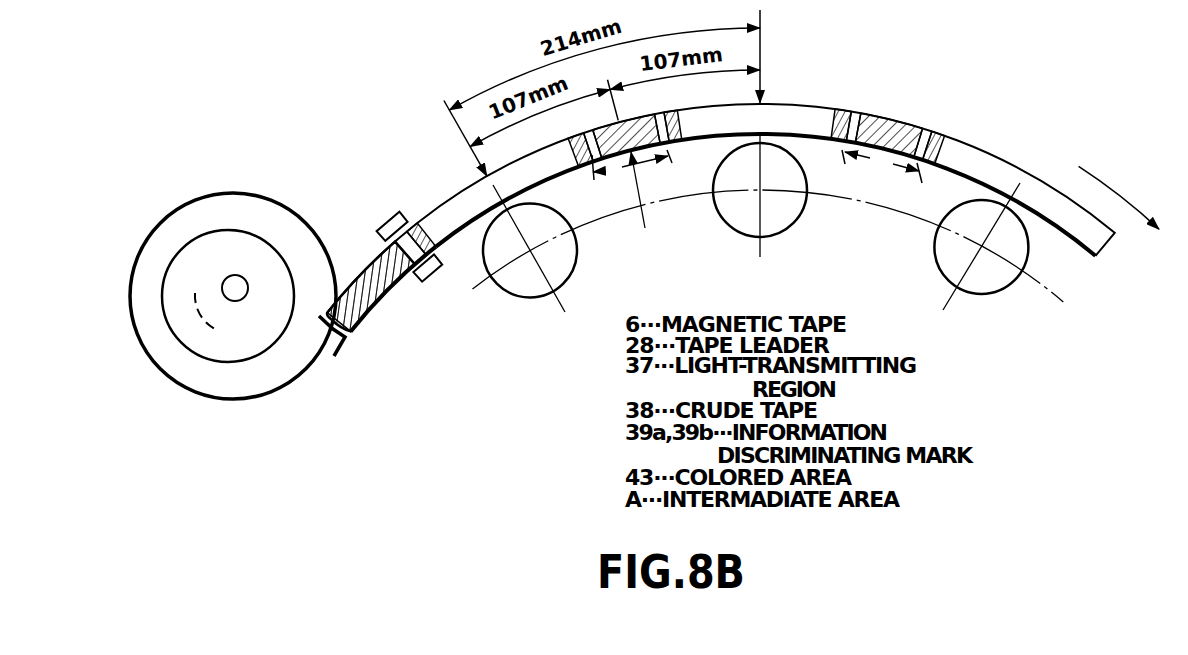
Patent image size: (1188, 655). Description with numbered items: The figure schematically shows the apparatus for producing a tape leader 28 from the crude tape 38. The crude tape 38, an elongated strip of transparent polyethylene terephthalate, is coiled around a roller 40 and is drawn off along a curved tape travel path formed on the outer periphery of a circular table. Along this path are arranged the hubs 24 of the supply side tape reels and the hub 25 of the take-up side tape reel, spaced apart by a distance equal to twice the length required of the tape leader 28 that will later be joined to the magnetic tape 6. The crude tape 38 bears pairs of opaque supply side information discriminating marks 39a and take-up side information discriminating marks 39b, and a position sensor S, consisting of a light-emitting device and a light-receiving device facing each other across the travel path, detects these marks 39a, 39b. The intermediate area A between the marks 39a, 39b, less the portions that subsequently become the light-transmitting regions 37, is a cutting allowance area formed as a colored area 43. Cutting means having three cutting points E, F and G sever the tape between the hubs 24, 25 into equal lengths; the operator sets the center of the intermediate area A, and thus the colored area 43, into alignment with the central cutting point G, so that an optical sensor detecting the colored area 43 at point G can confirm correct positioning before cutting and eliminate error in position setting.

The magnetic tape 6 is at (788, 180).
The hub of supply side tape reel 24 is at (526, 286).
The hub of take-up side tape reel 25 is at (781, 235).
The tape leader 28 is at (381, 277).
The light-transmitting region 37 is at (405, 270).
The crude tape 38 is at (376, 324).
The supply side information discriminating mark 39a is at (583, 165).
The take-up side information discriminating mark 39b is at (408, 243).
The roller 40 is at (233, 283).
The colored area 43 is at (365, 283).
The intermediate area A is at (757, 166).
The position sensor S is at (383, 229).
The cutting point E is at (458, 125).
The cutting point F is at (760, 51).
The central cutting point G is at (645, 199).